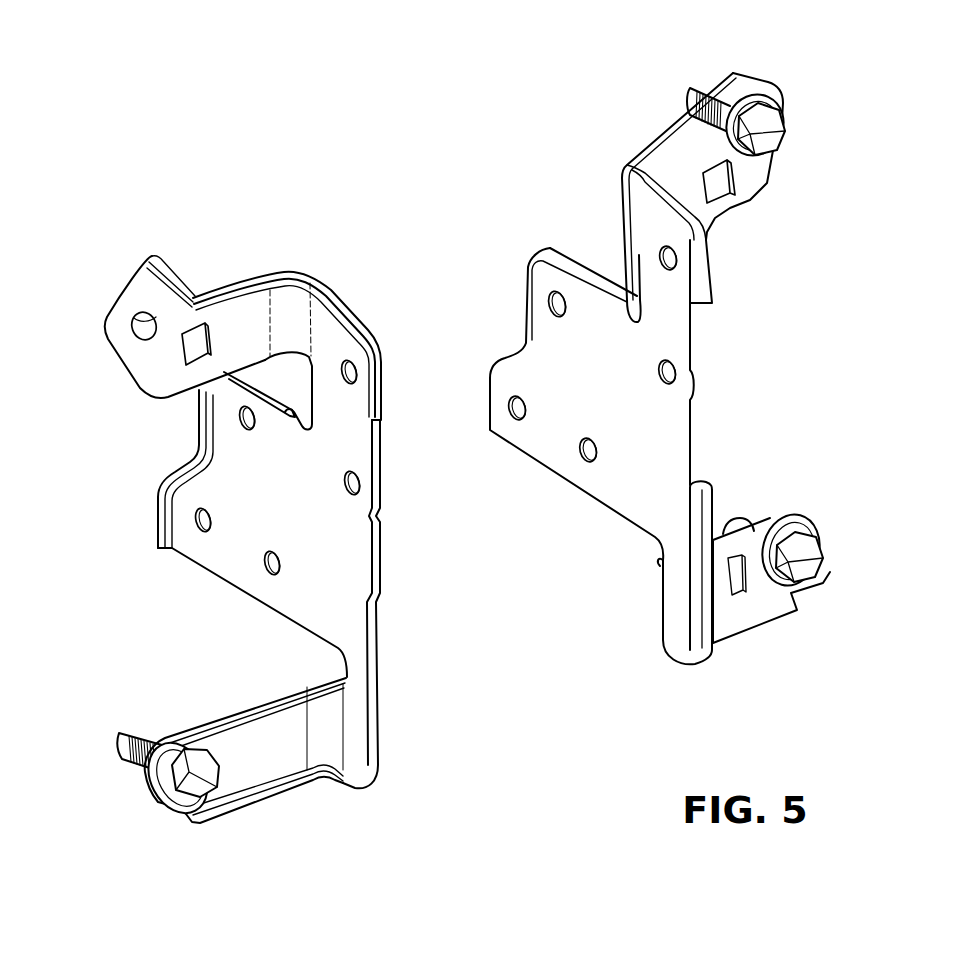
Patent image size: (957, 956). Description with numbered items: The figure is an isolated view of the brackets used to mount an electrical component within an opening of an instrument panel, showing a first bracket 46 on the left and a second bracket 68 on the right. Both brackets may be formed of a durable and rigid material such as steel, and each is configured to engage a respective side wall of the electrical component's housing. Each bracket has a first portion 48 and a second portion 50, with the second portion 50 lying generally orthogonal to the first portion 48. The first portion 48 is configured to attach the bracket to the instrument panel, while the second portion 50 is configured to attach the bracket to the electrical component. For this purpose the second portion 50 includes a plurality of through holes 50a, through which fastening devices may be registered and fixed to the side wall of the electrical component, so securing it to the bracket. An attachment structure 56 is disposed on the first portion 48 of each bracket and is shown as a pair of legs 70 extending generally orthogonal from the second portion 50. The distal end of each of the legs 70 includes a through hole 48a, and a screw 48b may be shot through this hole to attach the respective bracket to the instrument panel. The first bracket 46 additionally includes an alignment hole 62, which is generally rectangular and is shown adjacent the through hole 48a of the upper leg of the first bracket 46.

The first bracket 46 is at (276, 248).
The first portion 48 is at (167, 240).
The through hole 48a is at (143, 330).
The screw 48b is at (195, 778).
The second portion 50 is at (228, 615).
The through holes 50a is at (352, 370).
The attachment structure 56 is at (468, 456).
The alignment hole 62 is at (193, 327).
The second bracket 68 is at (623, 133).
The legs 70 is at (150, 385).